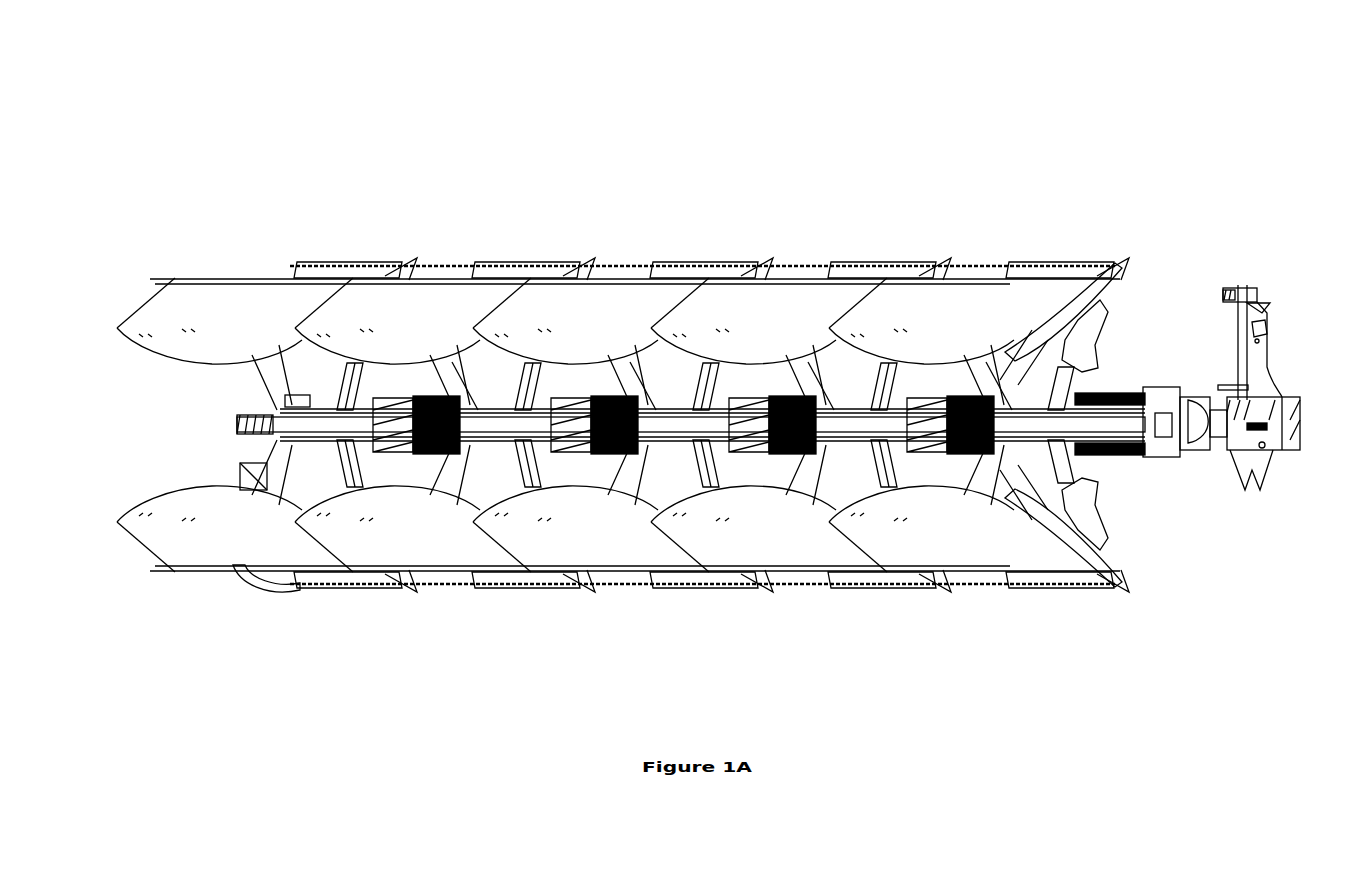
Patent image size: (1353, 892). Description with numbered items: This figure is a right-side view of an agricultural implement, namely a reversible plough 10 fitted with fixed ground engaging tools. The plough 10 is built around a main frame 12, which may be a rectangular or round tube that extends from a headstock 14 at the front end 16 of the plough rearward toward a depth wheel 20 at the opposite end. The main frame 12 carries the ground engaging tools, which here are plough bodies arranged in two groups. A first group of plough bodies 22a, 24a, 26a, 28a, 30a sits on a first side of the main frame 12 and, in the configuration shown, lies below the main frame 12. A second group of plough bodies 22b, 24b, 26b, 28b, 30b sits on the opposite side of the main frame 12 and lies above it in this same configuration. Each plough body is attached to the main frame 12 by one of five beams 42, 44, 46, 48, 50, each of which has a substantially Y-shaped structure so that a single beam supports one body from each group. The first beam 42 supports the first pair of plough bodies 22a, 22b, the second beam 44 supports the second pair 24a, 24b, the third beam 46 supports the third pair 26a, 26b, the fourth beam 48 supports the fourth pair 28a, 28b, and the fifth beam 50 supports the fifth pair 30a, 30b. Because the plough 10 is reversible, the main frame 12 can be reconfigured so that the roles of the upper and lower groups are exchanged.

The plough 10 is at (88, 106).
The main frame 12 is at (562, 410).
The headstock 14 is at (1257, 362).
The front end 16 is at (1280, 448).
The depth wheel 20 is at (248, 473).
The plough body 22a is at (968, 542).
The plough body 22b is at (938, 303).
The plough body 24a is at (782, 542).
The plough body 24b is at (785, 300).
The plough body 26a is at (607, 543).
The plough body 26b is at (643, 300).
The plough body 28a is at (430, 550).
The plough body 28b is at (433, 295).
The plough body 30a is at (203, 548).
The plough body 30b is at (223, 300).
The first beam 42 is at (997, 380).
The second beam 44 is at (817, 370).
The third beam 46 is at (635, 372).
The fourth beam 48 is at (465, 385).
The fifth beam 50 is at (285, 385).